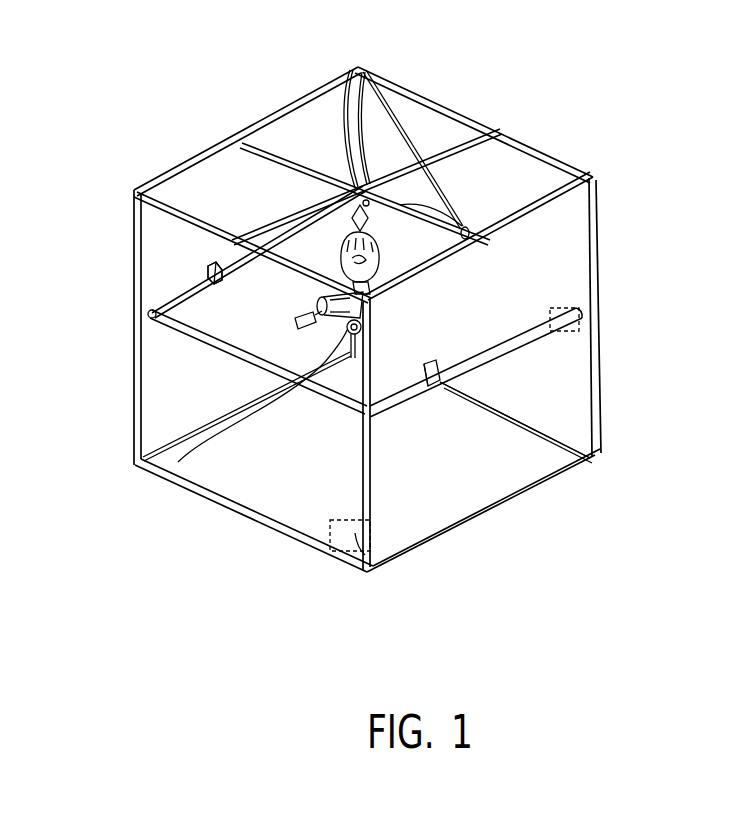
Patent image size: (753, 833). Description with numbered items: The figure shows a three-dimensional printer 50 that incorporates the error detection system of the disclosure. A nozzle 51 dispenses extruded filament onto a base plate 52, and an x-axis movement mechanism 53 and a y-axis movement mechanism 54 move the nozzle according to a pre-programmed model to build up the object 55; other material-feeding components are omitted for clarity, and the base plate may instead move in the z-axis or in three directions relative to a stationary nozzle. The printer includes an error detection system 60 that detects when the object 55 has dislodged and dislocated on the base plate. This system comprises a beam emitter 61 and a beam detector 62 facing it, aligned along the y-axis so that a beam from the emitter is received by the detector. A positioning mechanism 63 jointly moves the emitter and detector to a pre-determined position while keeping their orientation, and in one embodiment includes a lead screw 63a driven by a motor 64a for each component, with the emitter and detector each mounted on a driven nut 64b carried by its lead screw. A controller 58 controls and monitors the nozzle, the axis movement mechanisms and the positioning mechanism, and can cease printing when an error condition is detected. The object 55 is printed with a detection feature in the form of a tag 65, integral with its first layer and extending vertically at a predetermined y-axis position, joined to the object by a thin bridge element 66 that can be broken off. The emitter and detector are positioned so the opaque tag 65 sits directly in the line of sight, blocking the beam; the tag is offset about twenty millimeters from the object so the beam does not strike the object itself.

The 3D printer 50 is at (612, 247).
The nozzle 51 is at (355, 181).
The base plate 52 is at (352, 350).
The x-axis movement mechanism 53 is at (261, 134).
The y-axis movement mechanism 54 is at (451, 130).
The object 55 is at (338, 410).
The controller 58 is at (366, 576).
The error detection system 60 is at (402, 425).
The beam emitter 61 is at (541, 515).
The beam detector 62 is at (211, 244).
The positioning mechanism 63 is at (533, 355).
The lead screw 63a is at (155, 300).
The motor 64a is at (607, 335).
The driven nut 64b is at (206, 282).
The detection feature (tag) 65 is at (275, 324).
The bridge element 66 is at (178, 462).